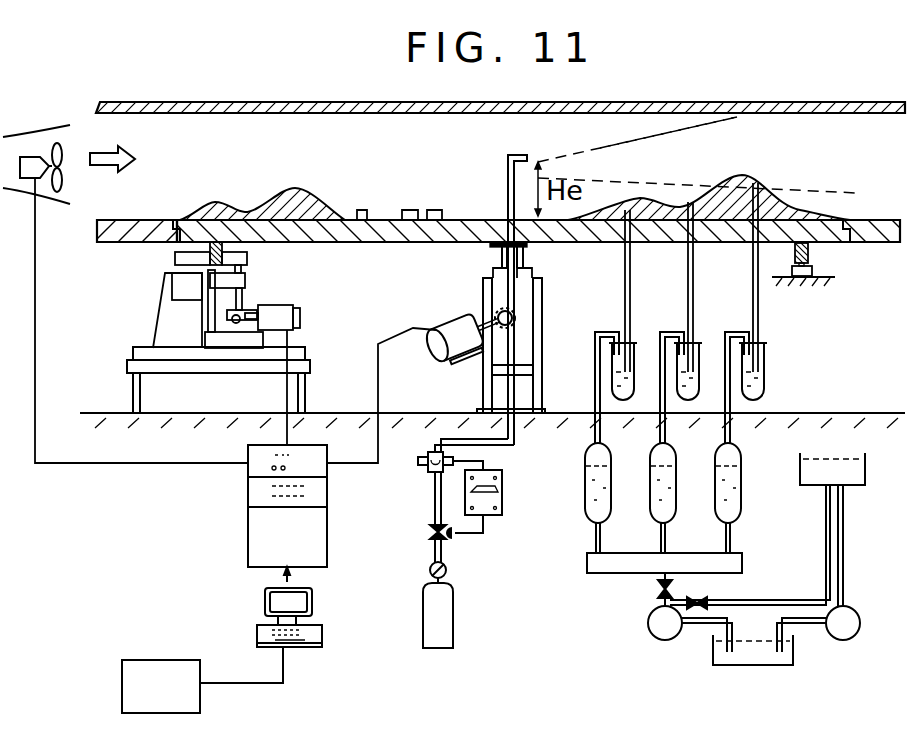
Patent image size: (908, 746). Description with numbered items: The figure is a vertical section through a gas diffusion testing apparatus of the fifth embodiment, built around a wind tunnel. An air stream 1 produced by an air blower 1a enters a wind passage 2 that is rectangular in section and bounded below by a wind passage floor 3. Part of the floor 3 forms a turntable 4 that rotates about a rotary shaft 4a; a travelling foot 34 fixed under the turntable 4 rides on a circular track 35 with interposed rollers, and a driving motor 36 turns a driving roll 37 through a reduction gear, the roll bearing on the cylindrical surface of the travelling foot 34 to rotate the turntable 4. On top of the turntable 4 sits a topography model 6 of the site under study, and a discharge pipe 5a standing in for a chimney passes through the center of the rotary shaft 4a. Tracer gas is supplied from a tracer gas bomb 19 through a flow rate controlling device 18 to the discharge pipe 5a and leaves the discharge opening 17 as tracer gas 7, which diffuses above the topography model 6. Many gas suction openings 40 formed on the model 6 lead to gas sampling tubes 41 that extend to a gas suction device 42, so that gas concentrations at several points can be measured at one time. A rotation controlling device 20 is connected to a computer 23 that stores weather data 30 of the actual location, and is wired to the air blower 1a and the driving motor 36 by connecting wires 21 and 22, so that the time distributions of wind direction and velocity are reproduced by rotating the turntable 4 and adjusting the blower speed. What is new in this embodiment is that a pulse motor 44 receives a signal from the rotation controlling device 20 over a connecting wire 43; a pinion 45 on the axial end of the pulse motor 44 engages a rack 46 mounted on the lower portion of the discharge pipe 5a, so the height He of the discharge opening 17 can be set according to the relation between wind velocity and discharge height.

The air stream 1 is at (108, 147).
The air blower 1a is at (34, 156).
The wind passage 2 is at (323, 152).
The wind passage floor 3 is at (150, 219).
The turntable 4 is at (380, 219).
The rotary shaft 4a is at (524, 262).
The discharge pipe 5a is at (507, 183).
The topography model 6 is at (800, 215).
The tracer gas 7 is at (643, 153).
The discharge opening 17 is at (527, 157).
The flow rate controlling device 18 is at (497, 515).
The tracer gas bomb 19 is at (455, 625).
The rotation controlling device 20 is at (248, 496).
The connecting wire 21 is at (120, 464).
The connecting wire 22 is at (287, 386).
The computer 23 is at (322, 640).
The weather data 30 is at (180, 660).
The travelling foot 34 is at (810, 254).
The circular track 35 is at (808, 278).
The driving motor 36 is at (282, 305).
The driving roll 37 is at (247, 258).
The gas suction openings 40 is at (690, 205).
The gas sampling tubes 41 is at (765, 394).
The gas suction device 42 is at (622, 574).
The connecting wire 43 is at (379, 393).
The pulse motor 44 is at (447, 325).
The pinion 45 is at (500, 311).
The rack 46 is at (508, 352).